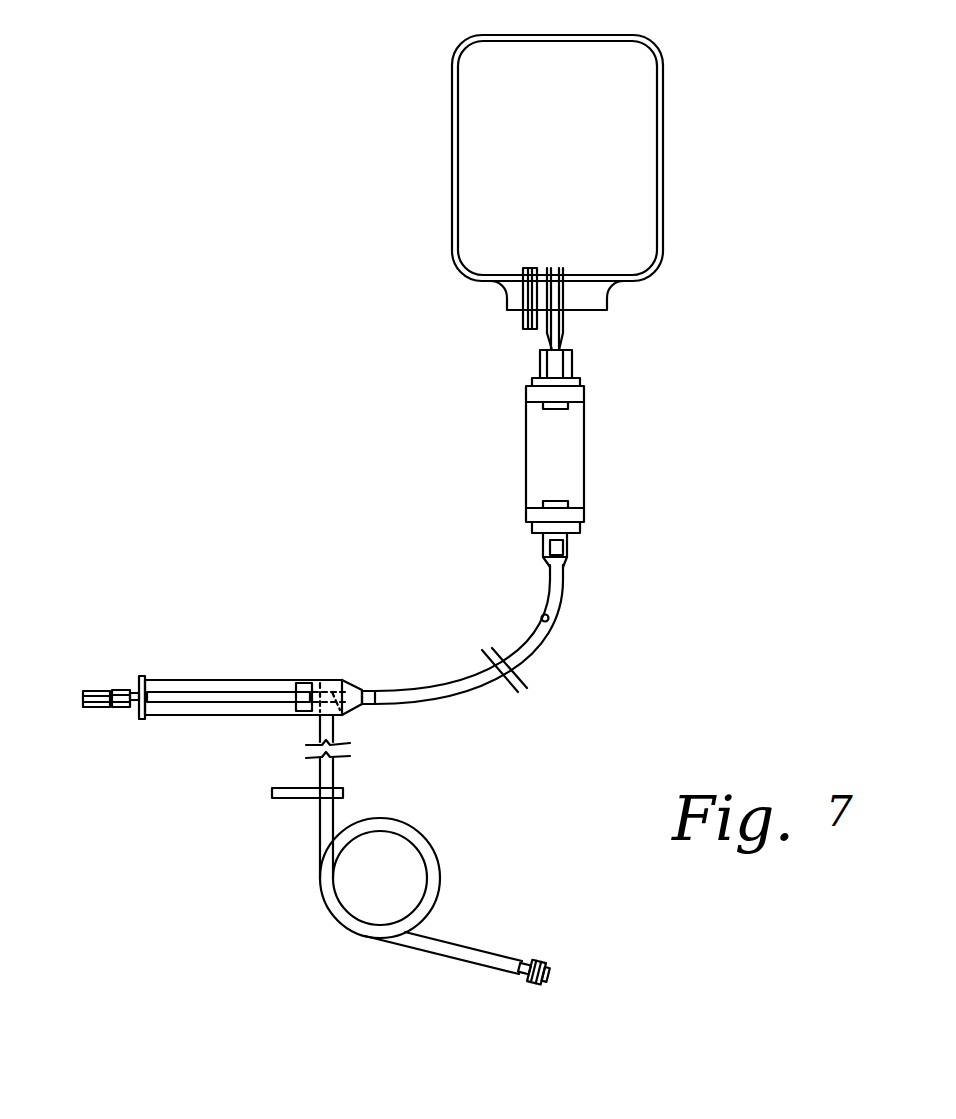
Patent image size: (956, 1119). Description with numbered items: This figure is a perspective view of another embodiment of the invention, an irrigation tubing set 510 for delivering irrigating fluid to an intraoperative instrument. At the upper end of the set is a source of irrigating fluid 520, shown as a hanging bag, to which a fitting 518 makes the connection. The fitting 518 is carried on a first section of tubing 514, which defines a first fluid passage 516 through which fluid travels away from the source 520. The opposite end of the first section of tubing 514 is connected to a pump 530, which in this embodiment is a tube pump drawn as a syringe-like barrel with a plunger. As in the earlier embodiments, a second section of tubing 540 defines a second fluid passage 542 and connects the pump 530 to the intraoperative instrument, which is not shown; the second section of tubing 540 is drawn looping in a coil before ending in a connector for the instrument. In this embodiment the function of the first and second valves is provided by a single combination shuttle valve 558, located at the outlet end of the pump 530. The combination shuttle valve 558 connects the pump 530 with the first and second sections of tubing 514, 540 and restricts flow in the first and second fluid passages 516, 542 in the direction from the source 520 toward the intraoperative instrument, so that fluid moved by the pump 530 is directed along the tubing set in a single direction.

The irrigation tubing set 510 is at (365, 432).
The first section of tubing 514 is at (563, 573).
The first fluid passage 516 is at (548, 620).
The fitting 518 is at (567, 325).
The source of irrigating fluid 520 is at (658, 100).
The pump 530 is at (180, 690).
The second section of tubing 540 is at (423, 838).
The second fluid passage 542 is at (463, 947).
The combination shuttle valve 558 is at (302, 678).